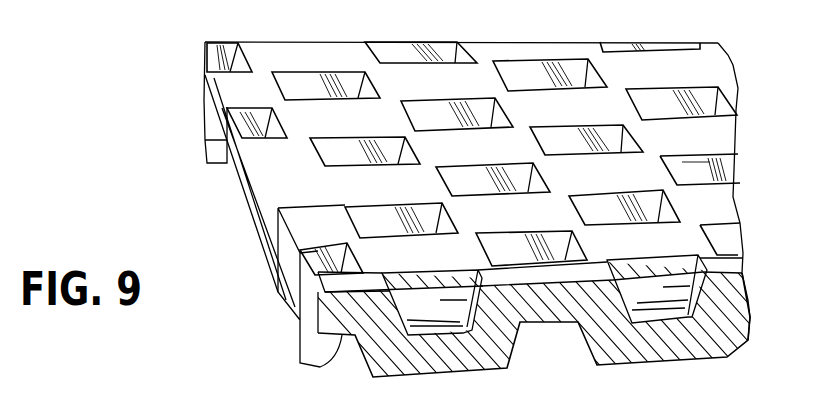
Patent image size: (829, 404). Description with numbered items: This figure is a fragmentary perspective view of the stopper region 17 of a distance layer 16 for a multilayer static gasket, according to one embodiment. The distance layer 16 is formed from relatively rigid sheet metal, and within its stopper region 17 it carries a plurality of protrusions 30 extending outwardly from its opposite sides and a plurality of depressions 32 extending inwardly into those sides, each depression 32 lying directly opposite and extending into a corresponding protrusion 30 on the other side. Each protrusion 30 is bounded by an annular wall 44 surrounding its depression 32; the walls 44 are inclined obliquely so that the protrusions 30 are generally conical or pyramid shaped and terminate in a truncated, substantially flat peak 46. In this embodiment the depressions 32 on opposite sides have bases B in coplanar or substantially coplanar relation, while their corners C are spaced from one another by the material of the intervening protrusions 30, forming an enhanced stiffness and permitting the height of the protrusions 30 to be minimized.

The distance layer 16 is at (732, 63).
The stopper region 17 is at (745, 213).
The protrusions 30 is at (310, 125).
The depressions 32 is at (663, 203).
The annular wall 44 is at (298, 302).
The peak 46 is at (667, 68).
The base B is at (438, 325).
The corner C is at (332, 167).